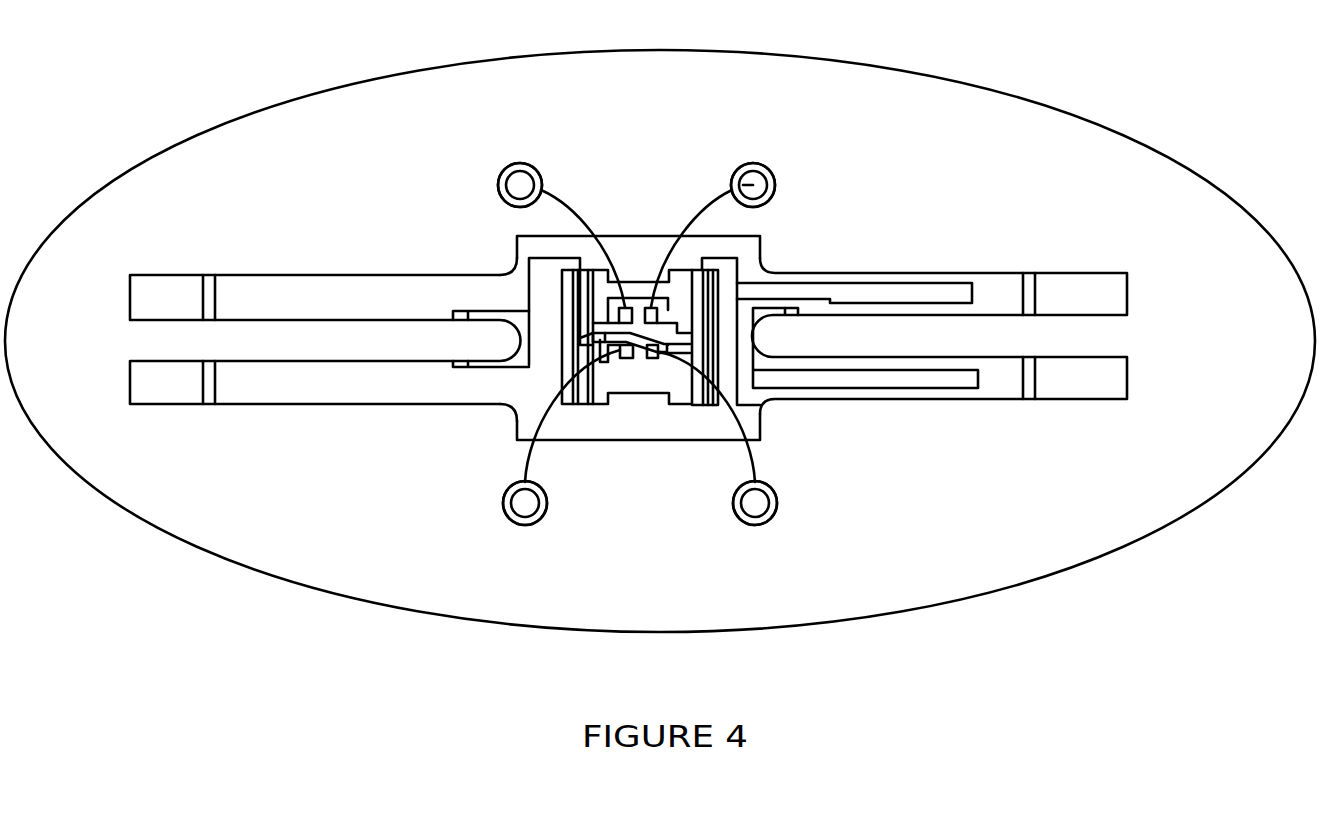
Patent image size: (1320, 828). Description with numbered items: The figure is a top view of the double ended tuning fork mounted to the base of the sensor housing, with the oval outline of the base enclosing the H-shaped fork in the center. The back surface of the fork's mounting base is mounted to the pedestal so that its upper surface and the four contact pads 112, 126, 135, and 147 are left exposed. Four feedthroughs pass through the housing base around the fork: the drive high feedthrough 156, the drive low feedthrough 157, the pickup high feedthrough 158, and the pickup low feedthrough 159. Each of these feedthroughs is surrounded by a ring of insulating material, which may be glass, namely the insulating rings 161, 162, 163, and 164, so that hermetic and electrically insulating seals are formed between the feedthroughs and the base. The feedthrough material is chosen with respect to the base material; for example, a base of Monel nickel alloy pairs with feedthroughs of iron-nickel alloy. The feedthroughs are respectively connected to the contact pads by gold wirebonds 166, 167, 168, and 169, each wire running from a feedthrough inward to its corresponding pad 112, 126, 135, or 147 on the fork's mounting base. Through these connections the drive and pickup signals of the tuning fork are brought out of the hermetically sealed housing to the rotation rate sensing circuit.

The contact pad 112 is at (656, 308).
The contact pad 126 is at (619, 316).
The contact pad 135 is at (604, 365).
The contact pad 147 is at (667, 355).
The drive high feedthrough 156 is at (753, 183).
The drive low feedthrough 157 is at (520, 183).
The pickup high feedthrough 158 is at (525, 503).
The pickup low feedthrough 159 is at (755, 503).
The insulating ring 161 is at (776, 191).
The insulating ring 162 is at (530, 185).
The insulating ring 163 is at (548, 508).
The insulating ring 164 is at (733, 508).
The wirebond 166 is at (668, 245).
The wirebond 167 is at (575, 206).
The wirebond 168 is at (528, 460).
The wirebond 169 is at (752, 457).